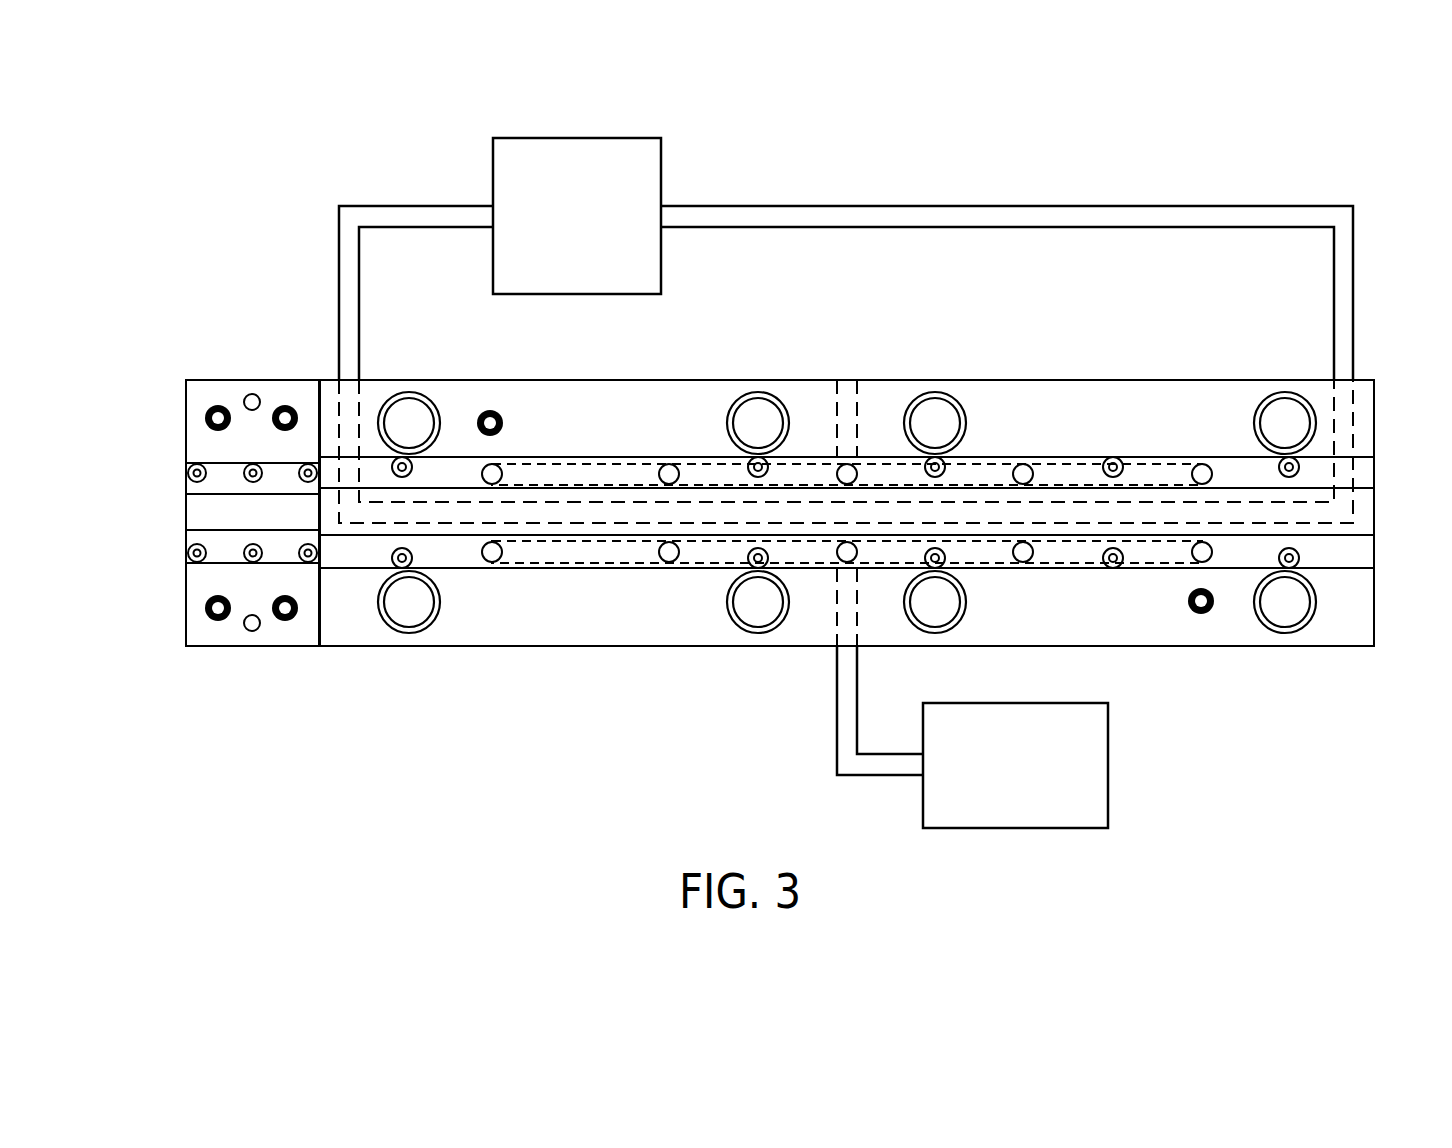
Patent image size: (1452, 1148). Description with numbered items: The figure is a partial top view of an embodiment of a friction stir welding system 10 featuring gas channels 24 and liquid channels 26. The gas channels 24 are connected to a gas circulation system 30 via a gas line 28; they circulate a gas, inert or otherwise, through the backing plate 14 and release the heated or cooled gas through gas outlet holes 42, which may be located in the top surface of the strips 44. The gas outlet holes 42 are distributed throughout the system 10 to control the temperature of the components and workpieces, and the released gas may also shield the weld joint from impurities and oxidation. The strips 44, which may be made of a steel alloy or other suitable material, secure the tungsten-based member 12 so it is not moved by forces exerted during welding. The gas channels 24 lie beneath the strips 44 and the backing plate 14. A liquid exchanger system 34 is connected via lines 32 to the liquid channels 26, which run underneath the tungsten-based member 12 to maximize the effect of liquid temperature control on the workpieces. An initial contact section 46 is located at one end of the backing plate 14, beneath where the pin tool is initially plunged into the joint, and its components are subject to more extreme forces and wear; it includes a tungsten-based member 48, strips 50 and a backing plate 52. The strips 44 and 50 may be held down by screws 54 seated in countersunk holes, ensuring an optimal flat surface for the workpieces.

The friction stir welding system 10 is at (383, 768).
The tungsten-based member 12 is at (1365, 513).
The backing plate 14 is at (1357, 614).
The gas channels 24 is at (1073, 470).
The liquid channels 26 is at (359, 380).
The gas line 28 is at (845, 698).
The gas circulation system 30 is at (1095, 802).
The lines 32 is at (348, 247).
The liquid exchanger system 34 is at (632, 148).
The gas outlet holes 42 is at (664, 464).
The strips 44 is at (1365, 478).
The initial contact section 46 is at (257, 369).
The tungsten-based member 48 is at (195, 514).
The strips 50 is at (222, 473).
The backing plate 52 is at (202, 635).
The screws 54 is at (304, 562).